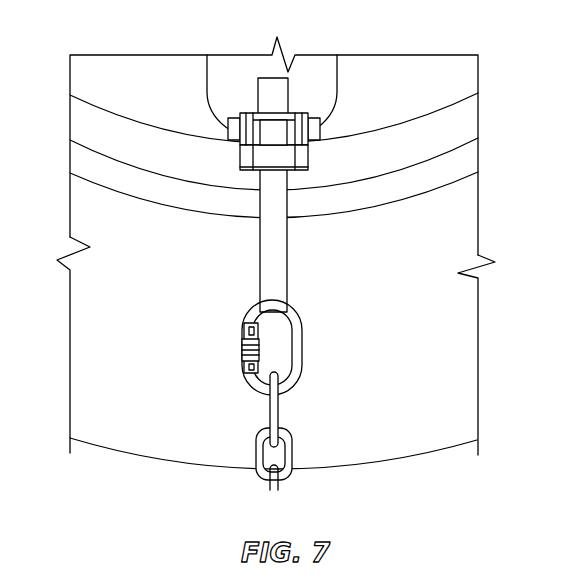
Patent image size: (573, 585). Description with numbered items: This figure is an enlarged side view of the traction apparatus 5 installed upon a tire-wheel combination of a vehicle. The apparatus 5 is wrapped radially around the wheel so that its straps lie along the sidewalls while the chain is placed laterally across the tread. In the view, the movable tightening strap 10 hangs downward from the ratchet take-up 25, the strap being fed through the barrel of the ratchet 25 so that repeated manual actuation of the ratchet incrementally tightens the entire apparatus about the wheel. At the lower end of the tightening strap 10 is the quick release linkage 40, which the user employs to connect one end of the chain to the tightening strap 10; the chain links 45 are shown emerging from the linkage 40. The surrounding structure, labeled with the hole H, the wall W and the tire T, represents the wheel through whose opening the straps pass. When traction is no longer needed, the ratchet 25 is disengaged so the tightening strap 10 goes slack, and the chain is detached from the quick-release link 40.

The traction apparatus 5 is at (305, 248).
The tightening strap 10 is at (287, 247).
The ratchet take-up 25 is at (332, 121).
The quick release linkage 40 is at (302, 347).
The chain 45 is at (293, 452).
The hole H is at (230, 97).
The web W is at (463, 127).
The truss T is at (93, 233).